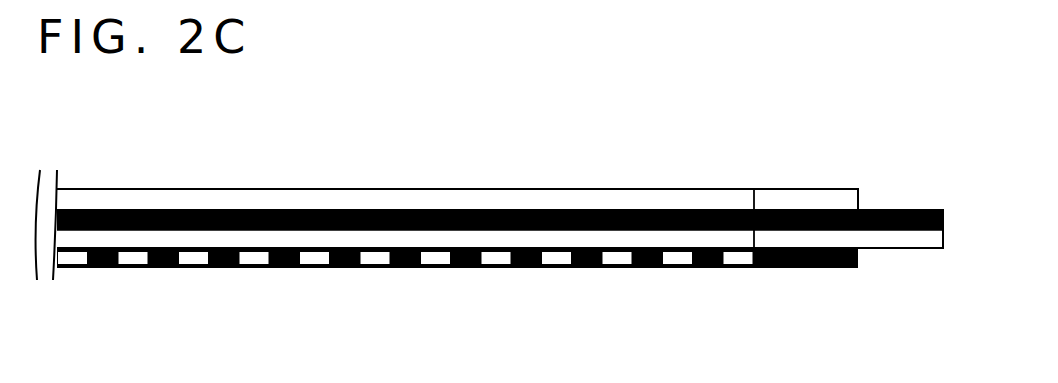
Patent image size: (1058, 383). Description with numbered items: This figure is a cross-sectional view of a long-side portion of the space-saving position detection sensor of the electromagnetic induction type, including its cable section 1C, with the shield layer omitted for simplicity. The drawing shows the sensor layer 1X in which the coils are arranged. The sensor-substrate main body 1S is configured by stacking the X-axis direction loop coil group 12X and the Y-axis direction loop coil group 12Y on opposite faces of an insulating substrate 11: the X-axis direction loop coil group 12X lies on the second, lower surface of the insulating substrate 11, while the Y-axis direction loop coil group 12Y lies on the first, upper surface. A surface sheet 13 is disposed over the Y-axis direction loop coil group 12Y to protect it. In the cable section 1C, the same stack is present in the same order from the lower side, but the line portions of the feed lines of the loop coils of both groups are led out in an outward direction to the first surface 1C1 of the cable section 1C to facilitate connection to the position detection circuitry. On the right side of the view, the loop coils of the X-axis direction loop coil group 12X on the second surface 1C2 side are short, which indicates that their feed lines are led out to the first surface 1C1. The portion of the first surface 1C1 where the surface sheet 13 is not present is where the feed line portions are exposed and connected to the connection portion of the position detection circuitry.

The sensor layer 1X is at (376, 93).
The sensor-substrate main body 1S is at (276, 175).
The cable section 1C is at (826, 175).
The first surface 1C1 is at (910, 165).
The second surface 1C2 is at (903, 290).
The insulating substrate 11 is at (500, 238).
The X-axis direction loop coil group 12X is at (165, 268).
The Y-axis direction loop coil group 12Y is at (117, 209).
The surface sheet 13 is at (603, 195).